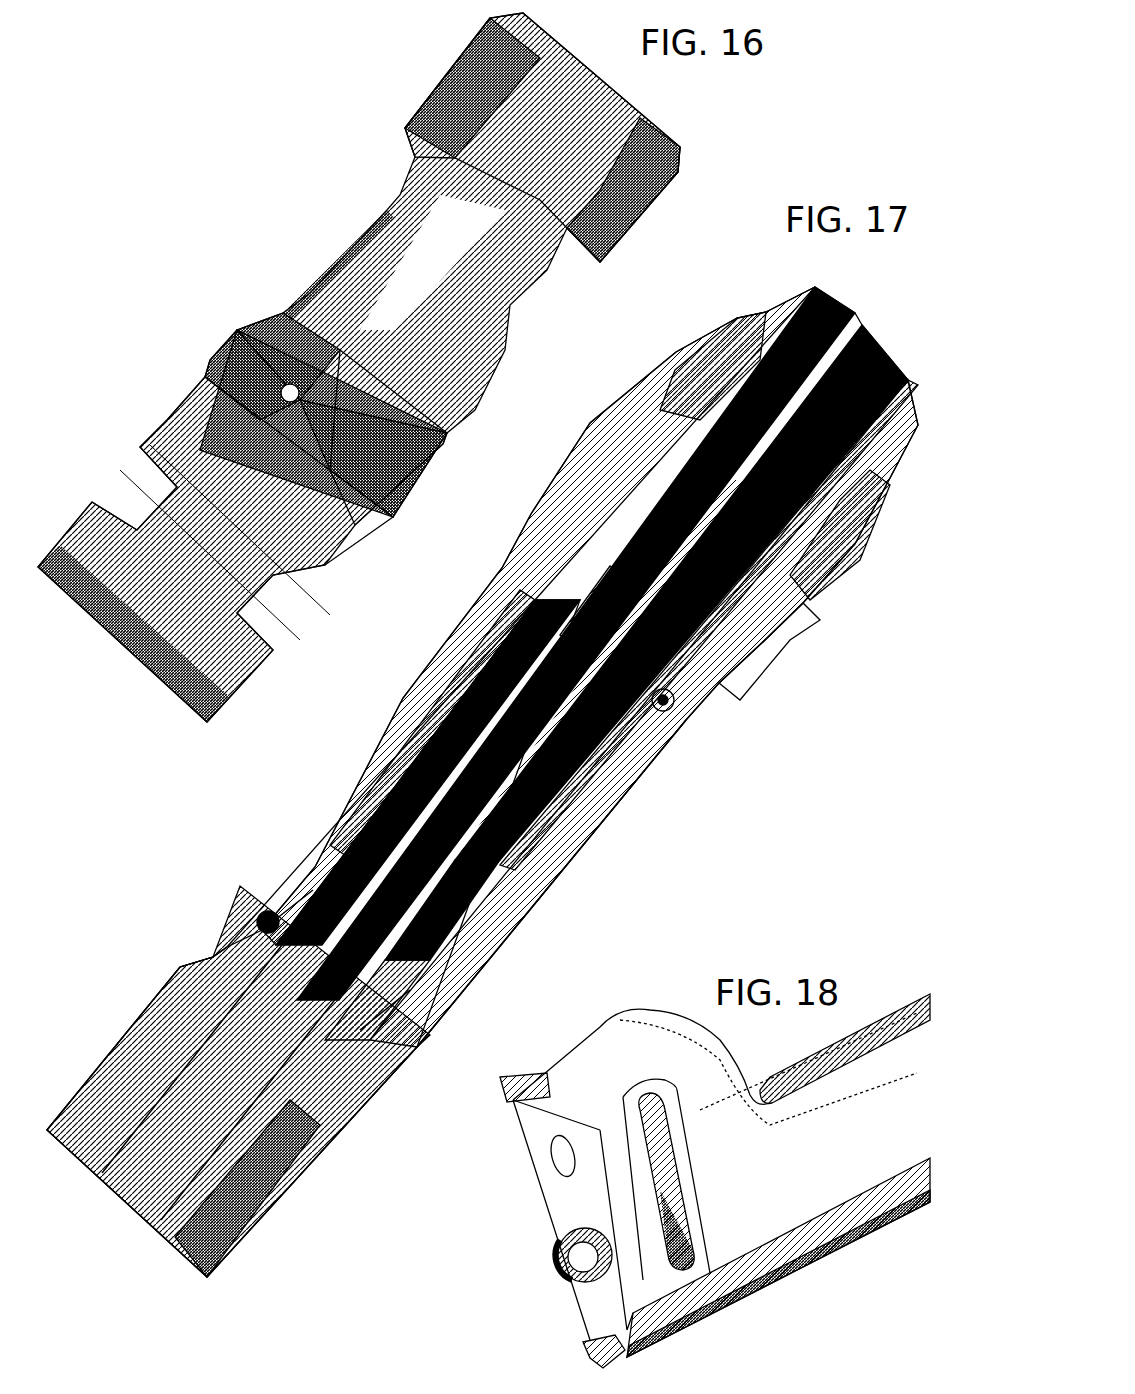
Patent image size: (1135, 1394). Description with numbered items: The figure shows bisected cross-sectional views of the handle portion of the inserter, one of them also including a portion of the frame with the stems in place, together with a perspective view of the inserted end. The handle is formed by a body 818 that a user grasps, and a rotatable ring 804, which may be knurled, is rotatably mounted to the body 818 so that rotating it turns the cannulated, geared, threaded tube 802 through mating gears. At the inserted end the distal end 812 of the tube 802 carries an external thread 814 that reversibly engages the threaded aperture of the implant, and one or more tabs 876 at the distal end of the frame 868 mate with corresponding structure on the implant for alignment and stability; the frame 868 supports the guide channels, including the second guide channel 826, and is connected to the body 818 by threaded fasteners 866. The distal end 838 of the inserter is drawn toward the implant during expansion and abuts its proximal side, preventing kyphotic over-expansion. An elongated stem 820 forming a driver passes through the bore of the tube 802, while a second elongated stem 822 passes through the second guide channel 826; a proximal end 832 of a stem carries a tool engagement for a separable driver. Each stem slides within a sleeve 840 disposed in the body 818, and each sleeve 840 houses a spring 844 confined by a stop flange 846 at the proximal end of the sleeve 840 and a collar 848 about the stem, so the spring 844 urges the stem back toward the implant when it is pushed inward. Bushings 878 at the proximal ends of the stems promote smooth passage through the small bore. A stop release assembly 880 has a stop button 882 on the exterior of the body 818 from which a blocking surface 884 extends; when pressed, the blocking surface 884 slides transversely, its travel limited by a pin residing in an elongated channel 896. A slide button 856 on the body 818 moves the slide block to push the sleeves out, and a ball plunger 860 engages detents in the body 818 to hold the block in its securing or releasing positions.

In FIG. 16, the threaded fasteners 866 is at (437, 88).
In FIG. 16, the tabs 876 is at (287, 307).
In FIG. 18, the tabs 876 is at (505, 1103).
In FIG. 16, the blocking surface 884 is at (240, 350).
In FIG. 17, the blocking surface 884 is at (265, 905).
In FIG. 16, the stop release assembly 880 is at (167, 378).
In FIG. 17, the stop release assembly 880 is at (160, 950).
In FIG. 16, the elongated channel 896 is at (292, 394).
In FIG. 16, the body 818 is at (98, 512).
In FIG. 17, the body 818 is at (140, 1020).
In FIG. 16, the stop button 882 is at (365, 545).
In FIG. 17, the second elongated stem 822 is at (800, 325).
In FIG. 17, the elongated stem 820 is at (893, 352).
In FIG. 17, the tube 802 is at (900, 383).
In FIG. 17, the collar 848 is at (560, 635).
In FIG. 17, the rotatable ring 804 is at (760, 638).
In FIG. 17, the sleeve 840 is at (385, 815).
In FIG. 17, the ball plunger 860 is at (678, 716).
In FIG. 17, the spring 844 is at (345, 855).
In FIG. 17, the slide button 856 is at (655, 775).
In FIG. 17, the stop flange 846 is at (313, 890).
In FIG. 17, the bushings 878 is at (215, 957).
In FIG. 17, the proximal end 832 is at (318, 1078).
In FIG. 18, the second guide channel 826 is at (575, 1160).
In FIG. 18, the external thread 814 is at (560, 1228).
In FIG. 18, the distal end 812 is at (548, 1262).
In FIG. 18, the distal end 838 is at (430, 1328).
In FIG. 18, the frame 868 is at (810, 1265).